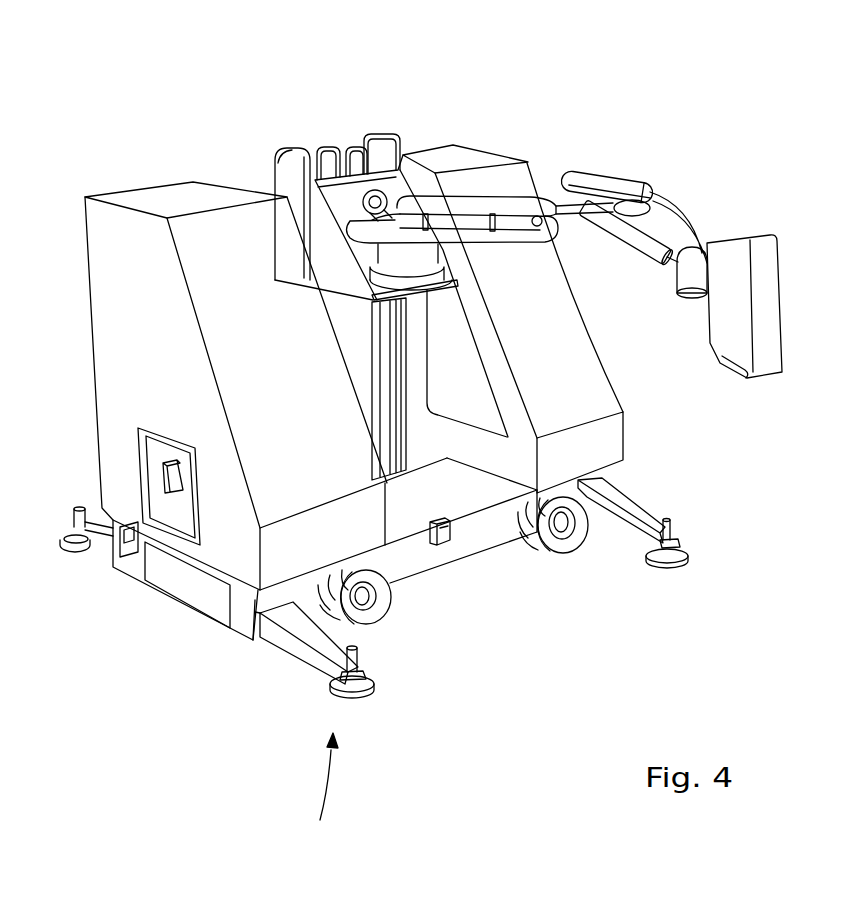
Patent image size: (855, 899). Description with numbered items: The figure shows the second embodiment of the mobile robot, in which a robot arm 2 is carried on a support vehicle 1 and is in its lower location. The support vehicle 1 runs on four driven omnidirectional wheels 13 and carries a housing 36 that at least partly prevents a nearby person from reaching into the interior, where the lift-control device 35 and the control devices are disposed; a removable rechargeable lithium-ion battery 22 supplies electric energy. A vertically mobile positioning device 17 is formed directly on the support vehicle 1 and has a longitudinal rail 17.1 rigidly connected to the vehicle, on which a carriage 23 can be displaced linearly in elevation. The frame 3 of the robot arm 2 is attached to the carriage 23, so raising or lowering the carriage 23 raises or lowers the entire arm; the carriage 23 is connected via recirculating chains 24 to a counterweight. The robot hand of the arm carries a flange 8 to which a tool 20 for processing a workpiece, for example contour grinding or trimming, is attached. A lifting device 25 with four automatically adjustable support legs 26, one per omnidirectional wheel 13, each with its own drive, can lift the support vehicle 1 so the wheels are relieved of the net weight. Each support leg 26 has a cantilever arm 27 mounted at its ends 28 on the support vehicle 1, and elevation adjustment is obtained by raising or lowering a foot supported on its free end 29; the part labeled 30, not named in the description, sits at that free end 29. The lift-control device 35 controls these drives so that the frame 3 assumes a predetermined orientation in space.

The support vehicle 1 is at (537, 617).
The robot arm 2 is at (524, 165).
The frame 3 is at (457, 293).
The flange 8 is at (702, 263).
The omnidirectional wheels 13 is at (392, 592).
The vertically mobile positioning device 17 is at (298, 132).
The longitudinal rail 17.1 is at (287, 177).
The tool 20 is at (740, 263).
The rechargeable lithium-ion battery 22 is at (177, 587).
The carriage 23 is at (372, 133).
The recirculating chains 24 is at (332, 142).
The lifting device 25 is at (318, 793).
The support legs 26 is at (102, 545).
The cantilever arm 27 is at (327, 667).
The ends 28 is at (250, 634).
The free end 29 is at (362, 655).
The foot plate 30 is at (353, 686).
The lift-control device 35 is at (167, 481).
The housing 36 is at (193, 237).